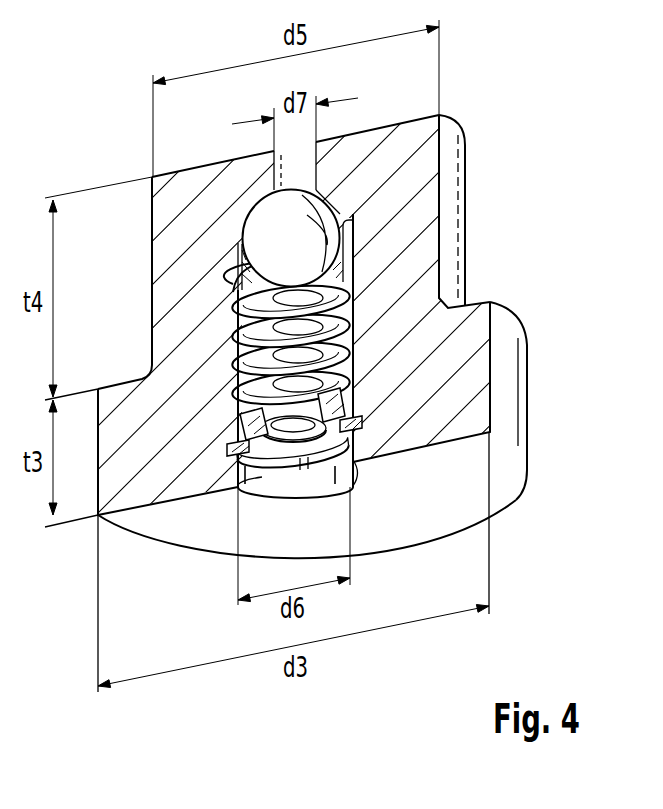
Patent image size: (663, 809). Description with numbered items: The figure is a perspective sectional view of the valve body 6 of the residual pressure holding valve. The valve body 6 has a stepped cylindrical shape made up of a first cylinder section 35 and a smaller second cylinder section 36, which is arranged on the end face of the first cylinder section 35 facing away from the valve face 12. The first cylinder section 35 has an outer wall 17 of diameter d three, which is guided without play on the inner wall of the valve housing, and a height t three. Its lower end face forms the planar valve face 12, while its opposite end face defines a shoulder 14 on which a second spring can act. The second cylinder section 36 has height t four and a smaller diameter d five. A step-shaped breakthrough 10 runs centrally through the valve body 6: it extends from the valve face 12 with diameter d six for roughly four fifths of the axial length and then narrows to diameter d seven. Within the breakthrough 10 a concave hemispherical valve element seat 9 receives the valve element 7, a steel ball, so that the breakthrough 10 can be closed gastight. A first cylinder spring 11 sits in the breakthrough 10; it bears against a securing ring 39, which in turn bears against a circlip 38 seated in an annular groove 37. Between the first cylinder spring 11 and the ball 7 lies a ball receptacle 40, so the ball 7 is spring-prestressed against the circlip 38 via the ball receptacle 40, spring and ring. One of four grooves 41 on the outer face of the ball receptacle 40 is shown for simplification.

The valve body 6 is at (552, 125).
The valve element 7 is at (244, 233).
The valve element seat 9 is at (253, 203).
The breakthrough 10 is at (318, 185).
The first cylinder spring 11 is at (352, 345).
The valve face 12 is at (173, 522).
The shoulder 14 is at (113, 382).
The outer wall 17 is at (507, 330).
The first cylinder section 35 is at (147, 413).
The second cylinder section 36 is at (447, 207).
The annular groove 37 is at (358, 444).
The circlip 38 is at (280, 455).
The securing ring 39 is at (345, 408).
The ball receptacle 40 is at (343, 217).
The groove 41 is at (347, 255).